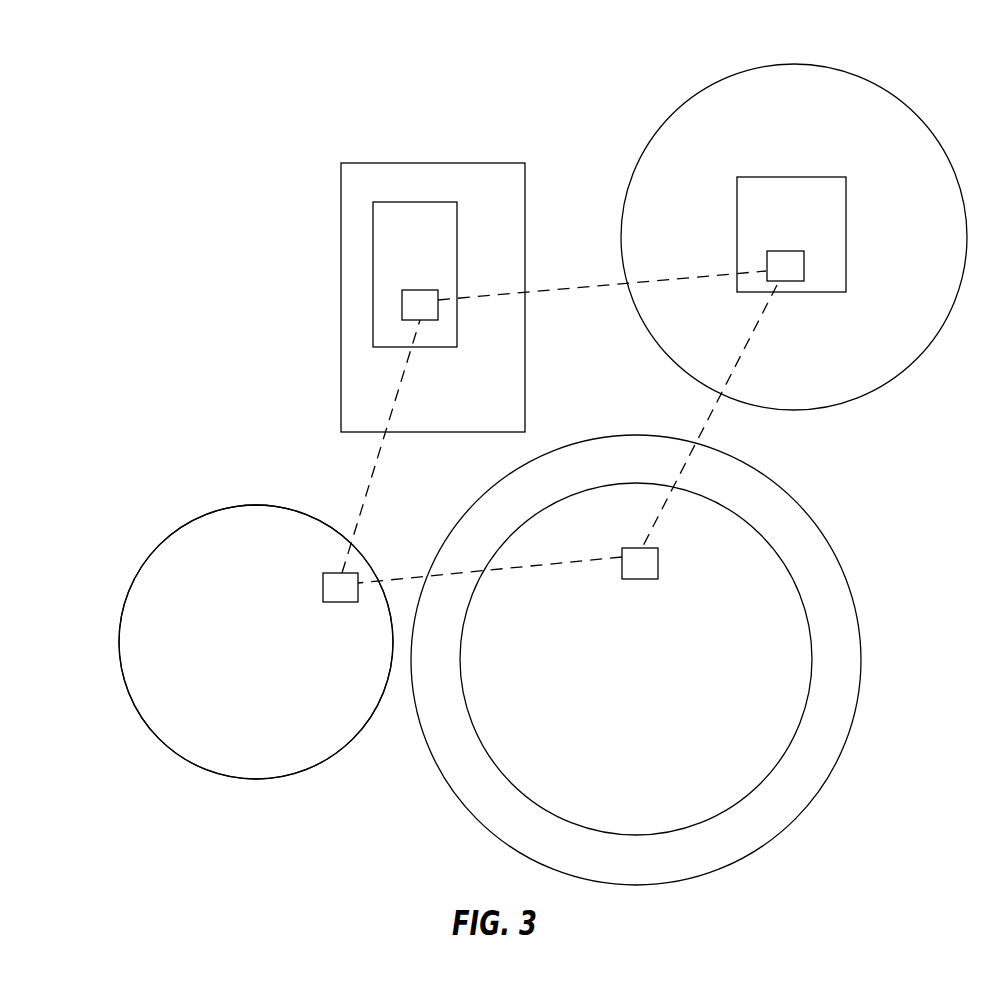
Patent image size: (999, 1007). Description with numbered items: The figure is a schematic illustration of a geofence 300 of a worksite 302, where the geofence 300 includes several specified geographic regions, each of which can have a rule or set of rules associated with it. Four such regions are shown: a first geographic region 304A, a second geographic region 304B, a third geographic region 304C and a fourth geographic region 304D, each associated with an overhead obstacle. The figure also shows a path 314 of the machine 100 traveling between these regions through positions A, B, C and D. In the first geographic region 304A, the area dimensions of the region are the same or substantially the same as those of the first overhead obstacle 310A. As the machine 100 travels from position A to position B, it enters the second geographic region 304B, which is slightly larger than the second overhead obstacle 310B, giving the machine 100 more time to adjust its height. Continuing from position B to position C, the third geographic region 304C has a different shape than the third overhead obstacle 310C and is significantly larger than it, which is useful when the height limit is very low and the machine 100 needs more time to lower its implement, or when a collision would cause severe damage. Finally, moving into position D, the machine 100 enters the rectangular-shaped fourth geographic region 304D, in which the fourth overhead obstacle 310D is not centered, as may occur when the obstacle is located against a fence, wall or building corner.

The geofence 300 is at (155, 270).
The worksite 302 is at (203, 318).
The machine 100 is at (798, 251).
The first overhead obstacle 310A is at (135, 583).
The first geographic region 304A is at (168, 537).
The second overhead obstacle 310B is at (797, 588).
The second geographic region 304B is at (860, 623).
The third overhead obstacle 310C is at (905, 102).
The third geographic region 304C is at (827, 177).
The fourth overhead obstacle 310D is at (447, 163).
The fourth geographic region 304D is at (373, 225).
The path 314 is at (368, 483).